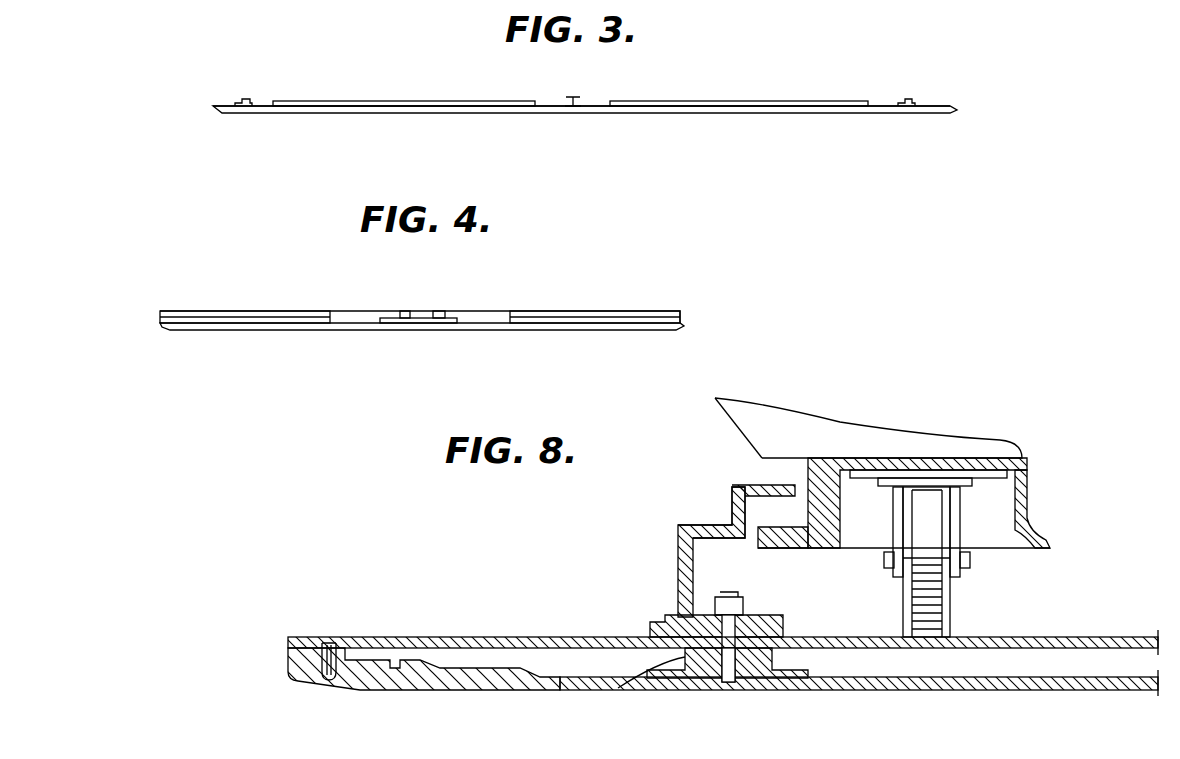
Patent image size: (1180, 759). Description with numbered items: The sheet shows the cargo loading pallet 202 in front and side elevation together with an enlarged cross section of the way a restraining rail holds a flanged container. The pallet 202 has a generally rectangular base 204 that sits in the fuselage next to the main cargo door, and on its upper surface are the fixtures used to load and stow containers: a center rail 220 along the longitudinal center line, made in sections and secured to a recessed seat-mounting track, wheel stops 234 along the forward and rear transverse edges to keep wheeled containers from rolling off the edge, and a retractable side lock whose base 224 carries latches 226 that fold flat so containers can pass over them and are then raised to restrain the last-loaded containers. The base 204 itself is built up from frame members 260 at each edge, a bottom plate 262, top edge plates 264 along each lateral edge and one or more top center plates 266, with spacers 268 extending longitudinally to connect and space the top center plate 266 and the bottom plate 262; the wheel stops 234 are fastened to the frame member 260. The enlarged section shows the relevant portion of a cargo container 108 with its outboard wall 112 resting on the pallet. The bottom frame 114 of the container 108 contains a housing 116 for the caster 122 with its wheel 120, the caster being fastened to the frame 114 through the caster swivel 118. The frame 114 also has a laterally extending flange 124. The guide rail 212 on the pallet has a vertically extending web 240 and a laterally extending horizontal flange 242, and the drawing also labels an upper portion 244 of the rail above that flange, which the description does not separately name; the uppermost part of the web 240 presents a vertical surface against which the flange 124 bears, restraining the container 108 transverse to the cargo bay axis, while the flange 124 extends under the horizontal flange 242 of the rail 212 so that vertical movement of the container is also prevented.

In FIG. 8, the cargo container 108 is at (813, 412).
In FIG. 8, the outboard end 112 is at (730, 426).
In FIG. 8, the bottom frame 114 is at (1026, 550).
In FIG. 8, the housing 116 is at (933, 460).
In FIG. 8, the caster swivel 118 is at (893, 487).
In FIG. 8, the wheel 120 is at (903, 620).
In FIG. 8, the caster 122 is at (893, 528).
In FIG. 8, the laterally extending flange 124 is at (773, 549).
In FIG. 3, the cargo loading pallet 202 is at (230, 99).
In FIG. 4, the cargo loading pallet 202 is at (158, 336).
In FIG. 3, the base 204 is at (213, 106).
In FIG. 4, the base 204 is at (682, 325).
In FIG. 3, the guide rail 212 is at (246, 100).
In FIG. 4, the guide rail 212 is at (182, 311).
In FIG. 8, the guide rail 212 is at (660, 566).
In FIG. 3, the center rail 220 is at (580, 100).
In FIG. 4, the base 224 is at (392, 318).
In FIG. 4, the latches 226 is at (438, 311).
In FIG. 3, the wheel stops 234 is at (360, 101).
In FIG. 8, the vertically extending web 240 is at (655, 621).
In FIG. 8, the laterally extending horizontal flange 242 is at (732, 500).
In FIG. 8, the bracket flange 244 is at (752, 486).
In FIG. 8, the frame members 260 is at (390, 690).
In FIG. 8, the bottom plate 262 is at (958, 690).
In FIG. 8, the top edge plates 264 is at (410, 637).
In FIG. 8, the top center plate 266 is at (1090, 637).
In FIG. 8, the spacers 268 is at (627, 688).